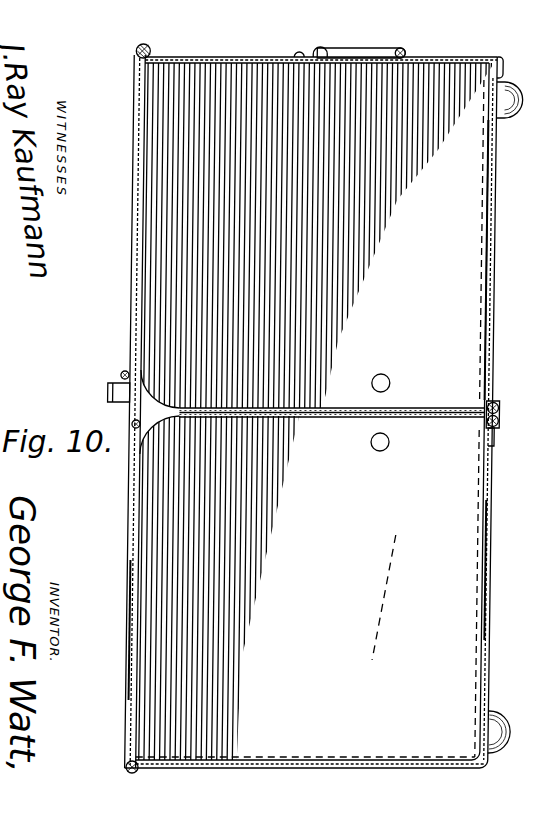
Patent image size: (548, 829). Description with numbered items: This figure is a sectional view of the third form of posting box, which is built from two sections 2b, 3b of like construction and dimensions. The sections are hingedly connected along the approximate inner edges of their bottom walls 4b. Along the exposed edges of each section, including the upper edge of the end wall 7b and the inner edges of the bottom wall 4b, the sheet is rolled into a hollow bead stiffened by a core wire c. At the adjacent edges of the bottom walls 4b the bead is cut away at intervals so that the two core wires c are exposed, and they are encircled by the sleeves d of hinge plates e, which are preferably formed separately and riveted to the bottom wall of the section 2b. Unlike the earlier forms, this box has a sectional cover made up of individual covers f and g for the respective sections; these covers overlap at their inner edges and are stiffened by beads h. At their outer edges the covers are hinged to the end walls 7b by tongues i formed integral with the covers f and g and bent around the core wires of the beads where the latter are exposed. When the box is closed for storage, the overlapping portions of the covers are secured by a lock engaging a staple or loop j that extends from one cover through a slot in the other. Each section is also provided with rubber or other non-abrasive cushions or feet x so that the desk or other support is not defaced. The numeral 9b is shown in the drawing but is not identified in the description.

The box section 2b is at (489, 696).
The end wall 7b is at (253, 57).
The box section 3b is at (495, 252).
The bottom wall 4b is at (487, 351).
The frame side rail 9b is at (516, 260).
The cover g is at (134, 186).
The tongue i is at (148, 52).
The bead h is at (123, 372).
The staple or loop j is at (109, 393).
The cover f is at (84, 580).
The core wire c is at (503, 419).
The sleeve d is at (498, 402).
The hinge plate e is at (499, 428).
The cushion or foot x is at (522, 94).